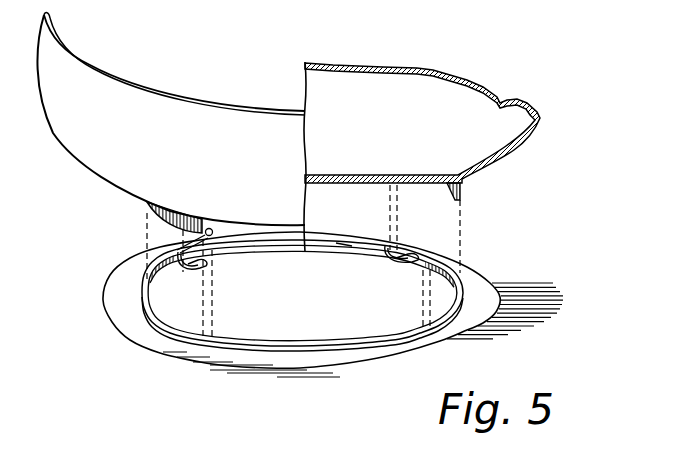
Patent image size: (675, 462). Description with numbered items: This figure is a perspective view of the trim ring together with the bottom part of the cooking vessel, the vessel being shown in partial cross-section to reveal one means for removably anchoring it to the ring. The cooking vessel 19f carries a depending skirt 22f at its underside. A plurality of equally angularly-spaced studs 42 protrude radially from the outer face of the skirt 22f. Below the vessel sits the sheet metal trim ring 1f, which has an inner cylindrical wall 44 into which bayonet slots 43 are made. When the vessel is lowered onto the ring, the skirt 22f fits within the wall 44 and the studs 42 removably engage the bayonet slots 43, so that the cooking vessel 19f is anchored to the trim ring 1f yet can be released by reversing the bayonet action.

The cooking vessel 19f is at (88, 133).
The depending skirt 22f is at (147, 212).
The sheet metal trim ring 1f is at (155, 327).
The studs 42 is at (192, 241).
The bayonet slots 43 is at (203, 267).
The inner cylindrical wall 44 is at (342, 250).